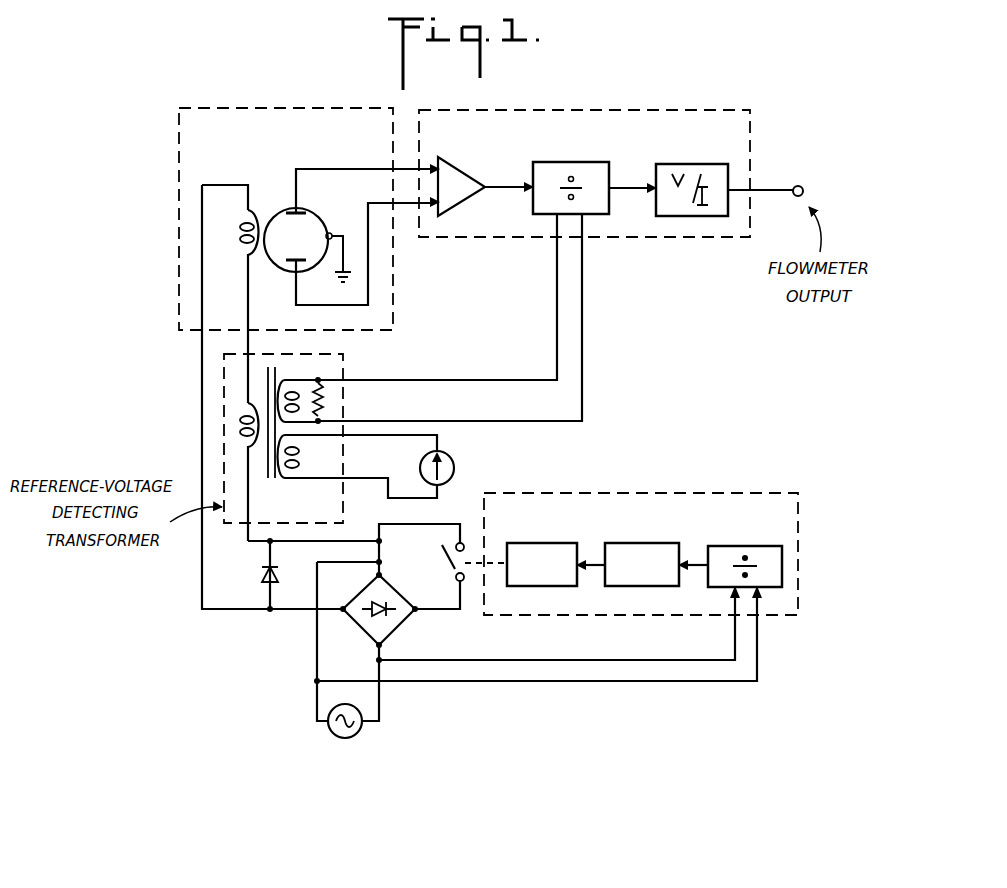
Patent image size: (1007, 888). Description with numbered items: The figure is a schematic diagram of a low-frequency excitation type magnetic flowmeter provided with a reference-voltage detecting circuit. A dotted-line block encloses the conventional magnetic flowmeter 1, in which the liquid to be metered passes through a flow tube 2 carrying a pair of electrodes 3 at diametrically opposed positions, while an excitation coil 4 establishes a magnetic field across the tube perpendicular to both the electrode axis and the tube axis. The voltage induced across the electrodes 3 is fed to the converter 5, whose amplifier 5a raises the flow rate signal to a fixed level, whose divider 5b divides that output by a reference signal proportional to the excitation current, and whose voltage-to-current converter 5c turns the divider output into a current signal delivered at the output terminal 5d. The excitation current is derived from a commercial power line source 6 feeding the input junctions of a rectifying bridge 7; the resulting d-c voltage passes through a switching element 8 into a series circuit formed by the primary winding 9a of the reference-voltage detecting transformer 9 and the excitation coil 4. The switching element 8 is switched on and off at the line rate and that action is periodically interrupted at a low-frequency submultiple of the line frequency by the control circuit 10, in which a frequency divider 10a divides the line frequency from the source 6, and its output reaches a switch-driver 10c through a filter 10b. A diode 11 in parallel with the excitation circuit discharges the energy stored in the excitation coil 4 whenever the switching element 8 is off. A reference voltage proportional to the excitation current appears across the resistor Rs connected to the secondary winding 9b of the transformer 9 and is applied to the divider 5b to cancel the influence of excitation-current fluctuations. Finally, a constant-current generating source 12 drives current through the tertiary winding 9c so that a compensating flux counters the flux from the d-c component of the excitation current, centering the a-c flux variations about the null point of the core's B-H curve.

The magnetic flowmeter 1 is at (318, 108).
The flow tube 2 is at (321, 217).
The electrodes 3 is at (290, 211).
The excitation coil 4 is at (243, 246).
The converter 5 is at (713, 112).
The amplifier 5a is at (460, 170).
The divider 5b is at (532, 205).
The voltage-to-current converter 5c is at (712, 162).
The output terminal 5d is at (803, 185).
The commercial power line source 6 is at (350, 737).
The rectifying bridge 7 is at (398, 628).
The switching element 8 is at (446, 565).
The reference-voltage detecting transformer 9 is at (268, 483).
The primary winding 9a is at (243, 419).
The secondary winding 9b is at (302, 378).
The tertiary winding 9c is at (305, 468).
The resistor Rs is at (325, 403).
The control circuit 10 is at (758, 495).
The frequency divider 10a is at (783, 569).
The filter 10b is at (640, 588).
The switch-driver 10c is at (550, 587).
The diode 11 is at (259, 577).
The constant-current generating source 12 is at (456, 464).